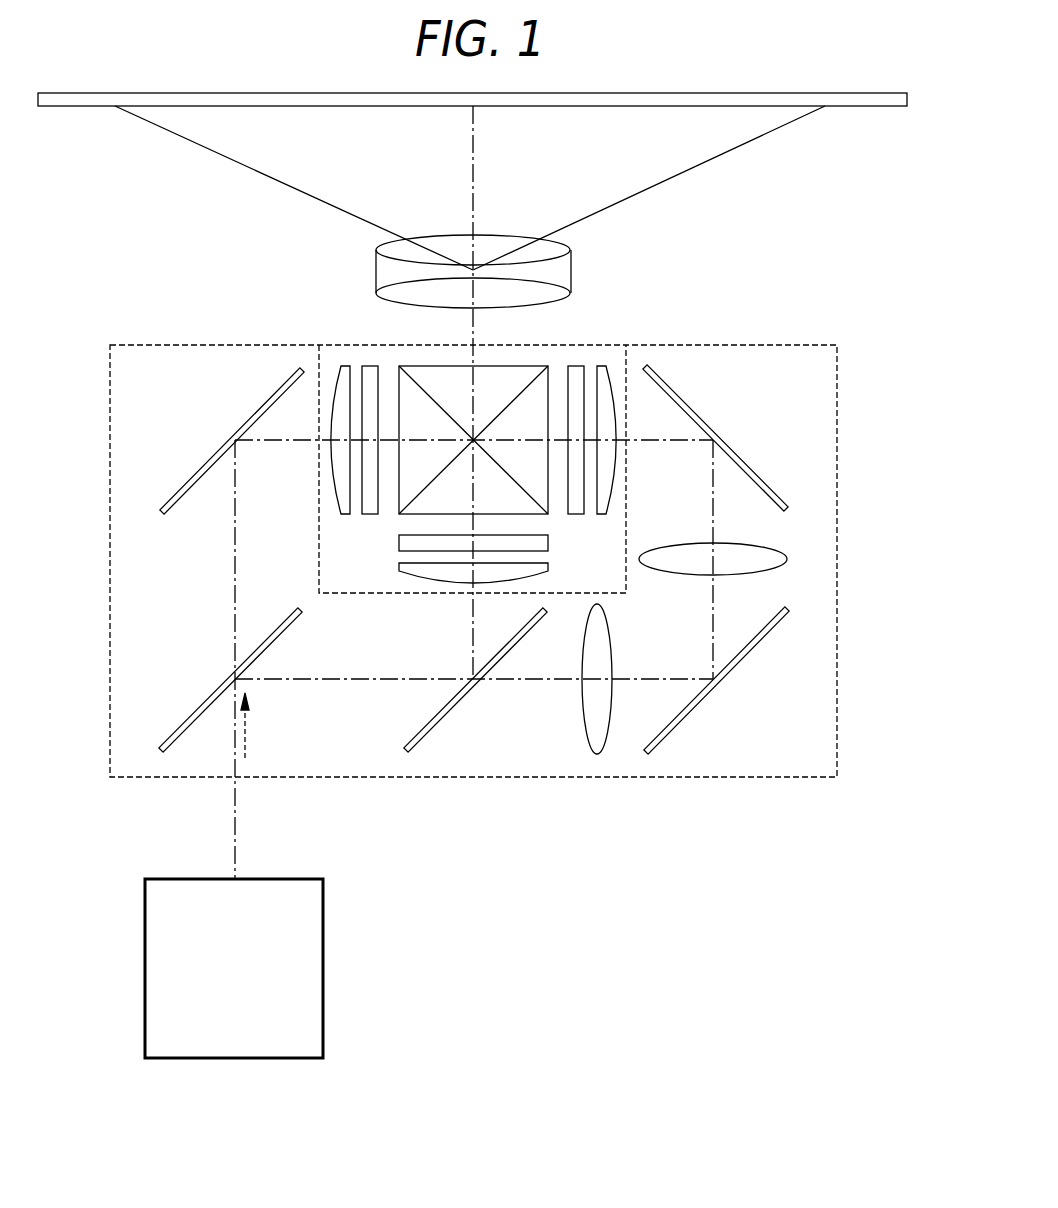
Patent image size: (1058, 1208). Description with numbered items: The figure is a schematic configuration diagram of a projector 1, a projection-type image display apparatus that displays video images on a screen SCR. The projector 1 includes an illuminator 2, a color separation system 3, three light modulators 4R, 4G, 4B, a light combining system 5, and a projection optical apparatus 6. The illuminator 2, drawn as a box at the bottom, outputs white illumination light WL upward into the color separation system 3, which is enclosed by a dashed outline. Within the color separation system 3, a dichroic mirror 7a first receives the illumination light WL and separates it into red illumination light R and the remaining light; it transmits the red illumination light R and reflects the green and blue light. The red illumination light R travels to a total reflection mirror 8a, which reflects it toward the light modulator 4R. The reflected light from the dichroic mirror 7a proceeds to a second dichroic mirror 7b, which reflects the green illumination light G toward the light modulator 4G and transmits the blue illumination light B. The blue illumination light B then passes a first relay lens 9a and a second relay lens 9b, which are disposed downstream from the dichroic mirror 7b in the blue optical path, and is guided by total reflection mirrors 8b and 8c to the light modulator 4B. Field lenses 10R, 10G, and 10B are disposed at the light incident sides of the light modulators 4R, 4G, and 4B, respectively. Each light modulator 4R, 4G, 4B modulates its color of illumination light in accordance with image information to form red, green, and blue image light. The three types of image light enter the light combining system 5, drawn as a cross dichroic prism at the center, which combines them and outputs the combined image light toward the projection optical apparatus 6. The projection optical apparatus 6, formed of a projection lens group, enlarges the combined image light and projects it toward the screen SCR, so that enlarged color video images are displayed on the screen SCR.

The projector 1 is at (855, 310).
The illuminator 2 is at (323, 903).
The color separation system 3 is at (110, 499).
The light modulator 4R is at (372, 363).
The light modulator 4G is at (407, 542).
The light modulator 4B is at (575, 363).
The light combining system 5 is at (488, 375).
The projection optical apparatus 6 is at (452, 247).
The dichroic mirror 7a is at (195, 713).
The dichroic mirror 7b is at (450, 713).
The total reflection mirror 8a is at (207, 453).
The total reflection mirror 8b is at (742, 665).
The total reflection mirror 8c is at (743, 458).
The first relay lens 9a is at (582, 700).
The second relay lens 9b is at (777, 548).
The field lens 10R is at (345, 363).
The field lens 10G is at (405, 568).
The field lens 10B is at (600, 363).
The screen SCR is at (870, 106).
The illumination light WL is at (245, 735).
The red illumination light R is at (235, 583).
The green illumination light G is at (473, 633).
The blue illumination light B is at (713, 630).